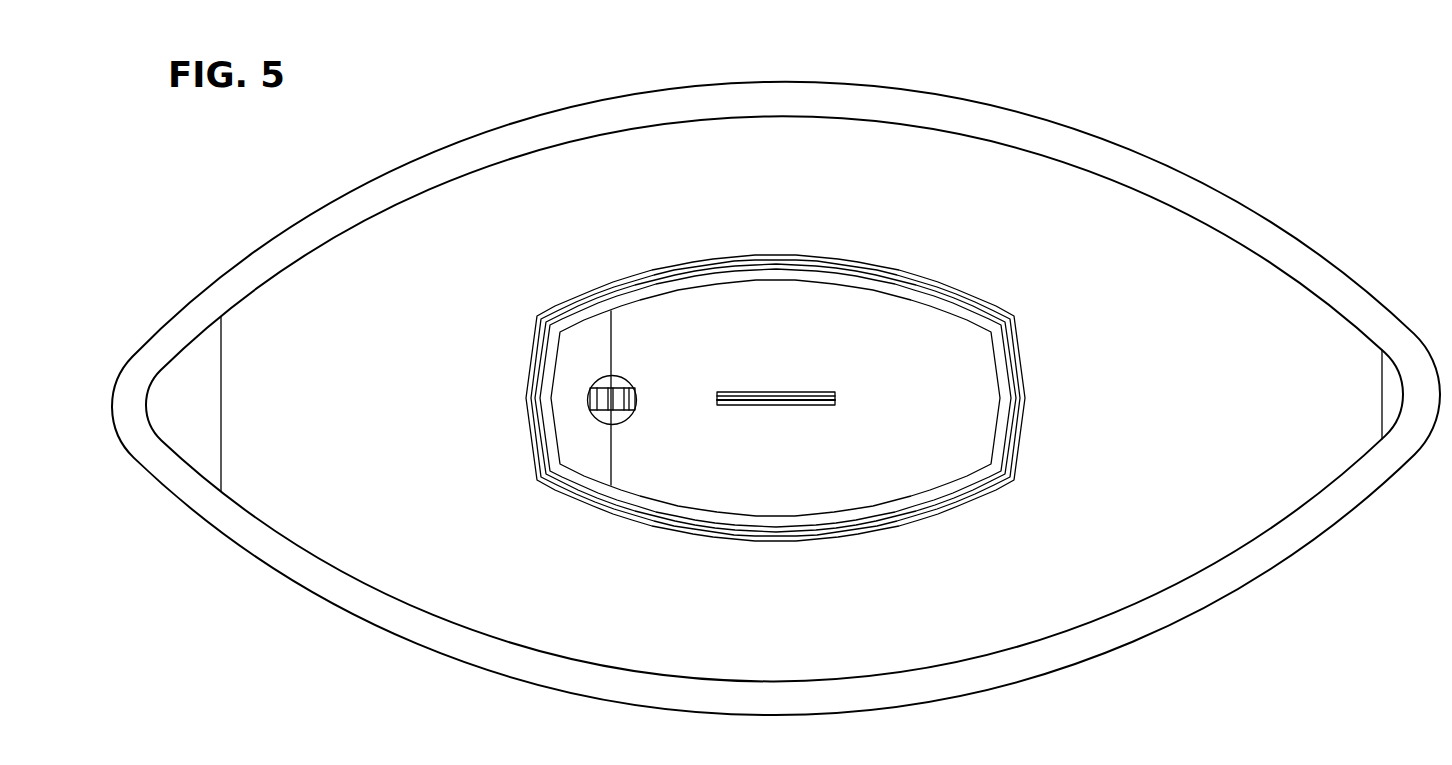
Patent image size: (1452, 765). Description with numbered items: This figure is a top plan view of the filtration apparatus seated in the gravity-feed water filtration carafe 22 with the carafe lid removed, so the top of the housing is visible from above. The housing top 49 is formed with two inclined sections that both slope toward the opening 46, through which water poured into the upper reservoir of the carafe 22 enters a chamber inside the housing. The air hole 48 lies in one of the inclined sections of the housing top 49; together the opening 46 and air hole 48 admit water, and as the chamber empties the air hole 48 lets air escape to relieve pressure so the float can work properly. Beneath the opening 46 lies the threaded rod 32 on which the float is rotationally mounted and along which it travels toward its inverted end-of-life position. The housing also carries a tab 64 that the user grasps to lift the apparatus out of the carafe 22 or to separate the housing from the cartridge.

The water filtration carafe 22 is at (1233, 198).
The threaded rod 32 is at (608, 400).
The opening 46 is at (593, 378).
The air hole 48 is at (975, 397).
The housing top 49 is at (903, 360).
The tab 64 is at (772, 395).